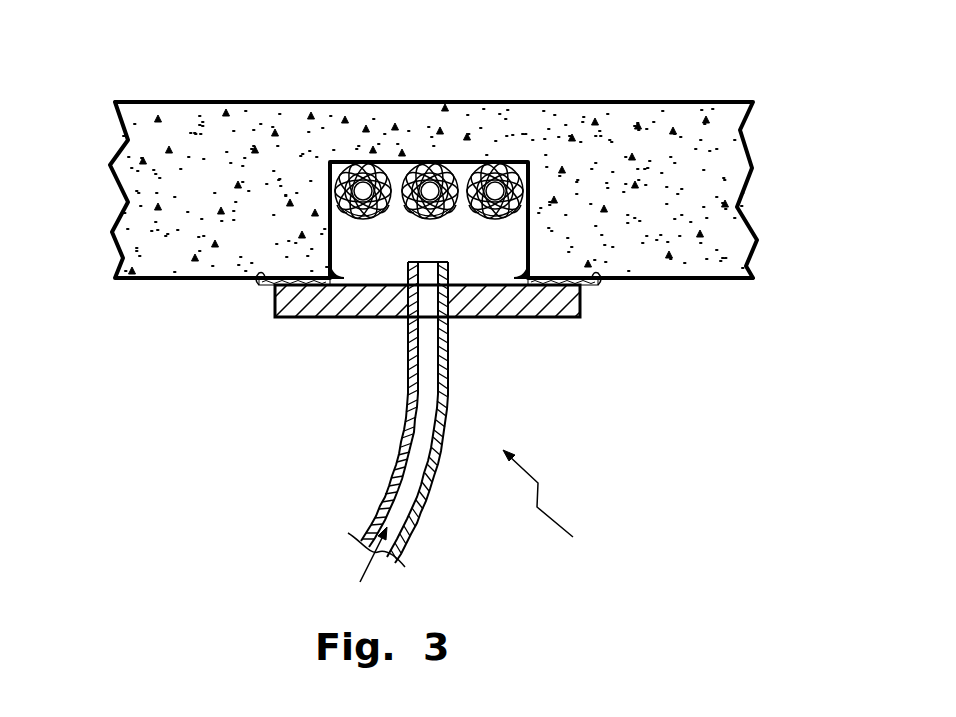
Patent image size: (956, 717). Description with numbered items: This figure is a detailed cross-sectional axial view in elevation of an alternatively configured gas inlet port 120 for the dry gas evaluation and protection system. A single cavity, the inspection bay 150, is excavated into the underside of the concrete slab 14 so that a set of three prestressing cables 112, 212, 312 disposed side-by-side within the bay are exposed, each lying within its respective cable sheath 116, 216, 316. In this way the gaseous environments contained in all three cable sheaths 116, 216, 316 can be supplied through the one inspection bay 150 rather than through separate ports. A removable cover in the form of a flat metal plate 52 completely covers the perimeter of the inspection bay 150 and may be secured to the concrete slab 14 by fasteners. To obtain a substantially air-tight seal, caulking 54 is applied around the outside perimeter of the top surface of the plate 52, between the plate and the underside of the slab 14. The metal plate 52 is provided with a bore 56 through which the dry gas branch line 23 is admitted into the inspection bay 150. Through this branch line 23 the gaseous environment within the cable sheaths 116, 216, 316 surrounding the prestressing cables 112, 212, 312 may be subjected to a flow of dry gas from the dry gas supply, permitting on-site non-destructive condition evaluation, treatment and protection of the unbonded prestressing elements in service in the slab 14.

The slab 14 is at (752, 170).
The cable sheath 116 is at (335, 162).
The cable sheath 216 is at (398, 162).
The cable sheath 316 is at (463, 162).
The prestressing cable 112 is at (368, 216).
The prestressing cable 212 is at (430, 216).
The prestressing cable 312 is at (497, 216).
The flat metal plate 52 is at (313, 317).
The caulking 54 is at (262, 288).
The bore 56 is at (467, 317).
The inspection bay 150 is at (493, 277).
The dry gas branch line 23 is at (385, 480).
The gas inlet port 120 is at (552, 510).